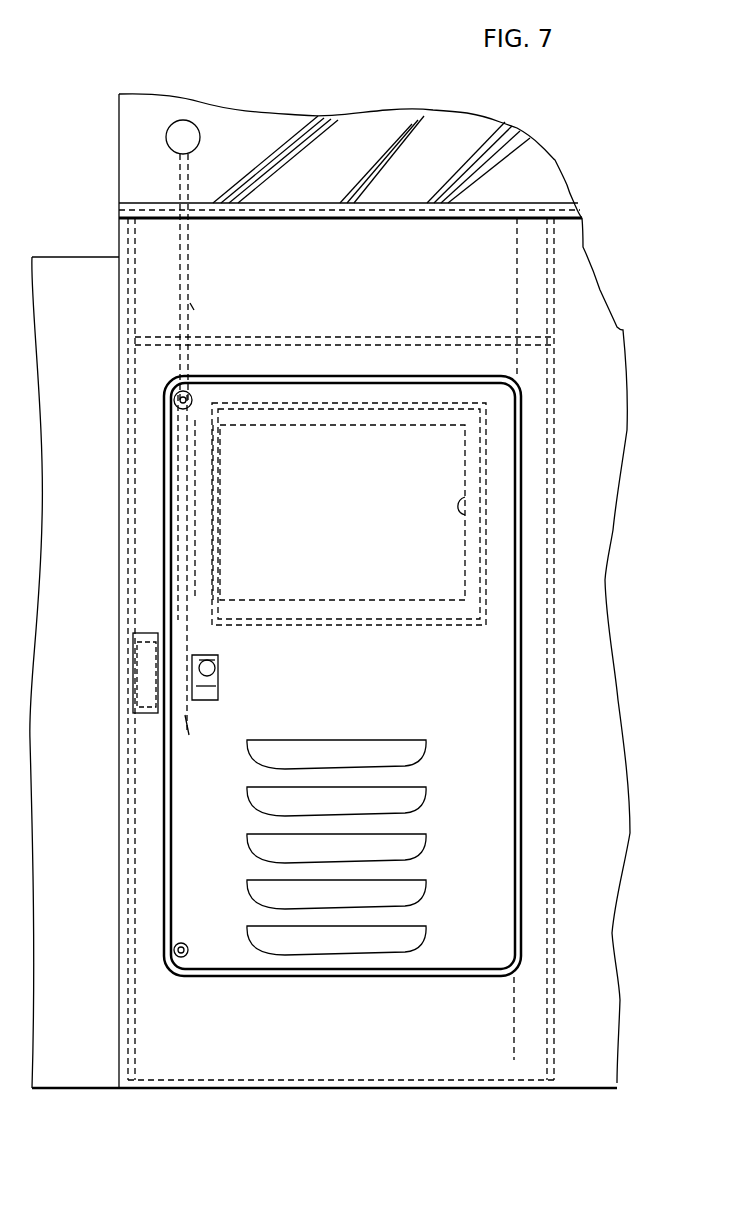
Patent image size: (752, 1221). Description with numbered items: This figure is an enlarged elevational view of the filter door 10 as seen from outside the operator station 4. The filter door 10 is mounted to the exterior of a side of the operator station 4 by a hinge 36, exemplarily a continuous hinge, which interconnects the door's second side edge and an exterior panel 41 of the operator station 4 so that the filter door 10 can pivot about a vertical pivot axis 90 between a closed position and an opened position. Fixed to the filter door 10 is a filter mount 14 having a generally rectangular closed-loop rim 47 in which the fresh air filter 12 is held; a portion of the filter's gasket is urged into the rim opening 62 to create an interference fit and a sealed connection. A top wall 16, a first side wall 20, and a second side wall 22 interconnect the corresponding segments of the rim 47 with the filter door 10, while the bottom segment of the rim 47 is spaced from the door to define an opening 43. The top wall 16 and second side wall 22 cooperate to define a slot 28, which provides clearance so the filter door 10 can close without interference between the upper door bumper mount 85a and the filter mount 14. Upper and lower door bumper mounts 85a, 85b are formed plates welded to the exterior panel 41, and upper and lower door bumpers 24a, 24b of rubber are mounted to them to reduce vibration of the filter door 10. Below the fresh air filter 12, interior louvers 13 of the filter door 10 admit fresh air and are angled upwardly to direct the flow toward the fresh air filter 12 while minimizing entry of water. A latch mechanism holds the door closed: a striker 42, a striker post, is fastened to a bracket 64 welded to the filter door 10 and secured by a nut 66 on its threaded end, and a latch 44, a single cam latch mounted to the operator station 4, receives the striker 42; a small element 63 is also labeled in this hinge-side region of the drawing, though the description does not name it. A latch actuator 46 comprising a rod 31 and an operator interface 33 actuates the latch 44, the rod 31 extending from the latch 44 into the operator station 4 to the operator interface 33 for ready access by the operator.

The operator station 4 is at (636, 288).
The filter door 10 is at (474, 687).
The fresh air filter 12 is at (342, 516).
The louvers 13 is at (420, 756).
The filter mount 14 is at (390, 380).
The top wall 16 is at (333, 376).
The first side wall 20 is at (488, 447).
The second side wall 22 is at (160, 503).
The upper door bumper 24a is at (165, 392).
The lower door bumper 24b is at (178, 962).
The slot 28 is at (217, 445).
The rod 31 is at (190, 254).
The operator interface 33 is at (200, 135).
The hinge 36 is at (523, 762).
The exterior panel 41 is at (588, 1016).
The striker 42 is at (200, 706).
The opening 43 is at (385, 633).
The latch 44 is at (186, 726).
The latch actuator 46 is at (192, 307).
The closed-loop rim 47 is at (408, 632).
The rim opening 62 is at (470, 511).
The hinge pin 63 is at (211, 653).
The bracket 64 is at (216, 693).
The nut 66 is at (220, 670).
The upper door bumper mount 85a is at (172, 408).
The lower door bumper mount 85b is at (228, 978).
The pivot axis 90 is at (517, 272).